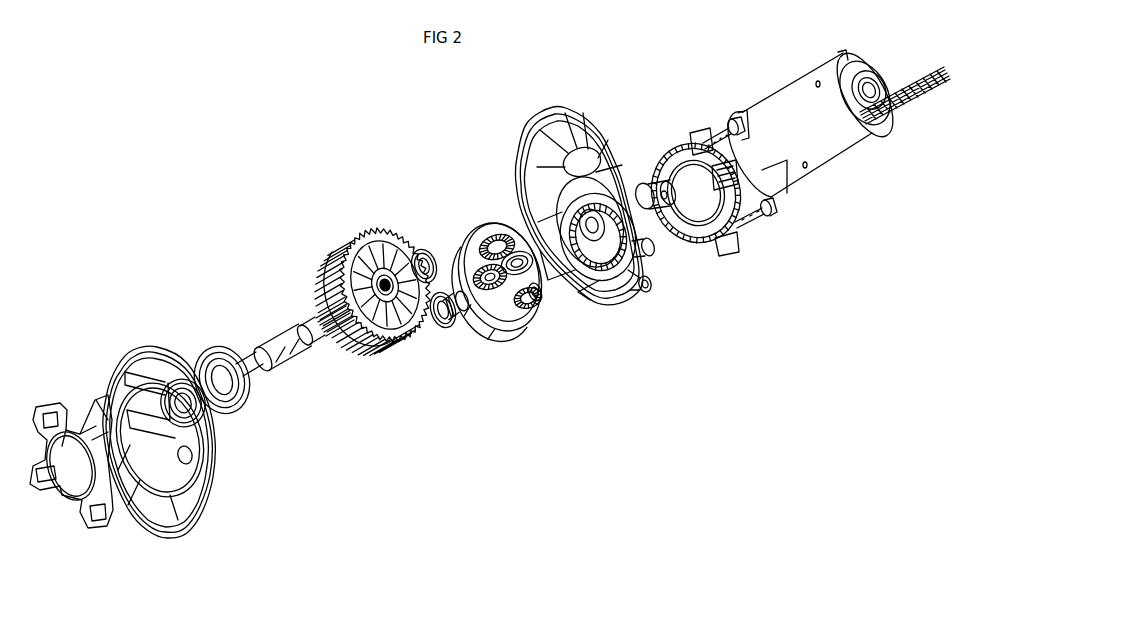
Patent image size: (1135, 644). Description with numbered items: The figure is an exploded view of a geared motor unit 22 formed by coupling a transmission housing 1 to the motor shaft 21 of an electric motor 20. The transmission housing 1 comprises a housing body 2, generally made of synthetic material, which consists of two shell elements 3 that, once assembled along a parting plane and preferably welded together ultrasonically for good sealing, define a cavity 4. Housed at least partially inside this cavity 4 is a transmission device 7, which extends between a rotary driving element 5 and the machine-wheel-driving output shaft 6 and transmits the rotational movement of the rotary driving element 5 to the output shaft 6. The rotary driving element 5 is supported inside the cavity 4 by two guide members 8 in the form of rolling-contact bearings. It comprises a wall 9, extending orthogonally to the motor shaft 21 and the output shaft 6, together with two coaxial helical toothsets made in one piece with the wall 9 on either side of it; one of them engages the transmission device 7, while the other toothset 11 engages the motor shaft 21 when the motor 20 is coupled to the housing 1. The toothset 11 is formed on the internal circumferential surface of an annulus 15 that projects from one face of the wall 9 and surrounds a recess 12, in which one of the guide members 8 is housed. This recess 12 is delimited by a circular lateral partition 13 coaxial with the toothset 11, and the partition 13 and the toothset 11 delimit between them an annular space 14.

The transmission housing 1 is at (170, 545).
The housing body 2 is at (137, 348).
The shell elements 3 is at (157, 349).
The cavity 4 is at (197, 438).
The rotary driving element 5 is at (497, 327).
The output shaft 6 is at (280, 323).
The transmission device 7 is at (357, 222).
The guide members 8 is at (445, 328).
The wall 9 is at (518, 307).
The helical toothset 11 is at (495, 230).
The recess 12 is at (483, 257).
The circular lateral partition 13 is at (487, 232).
The annular space 14 is at (532, 302).
The annulus 15 is at (497, 313).
The electric motor 20 is at (787, 90).
The motor shaft 21 is at (747, 163).
The geared motor unit 22 is at (697, 348).